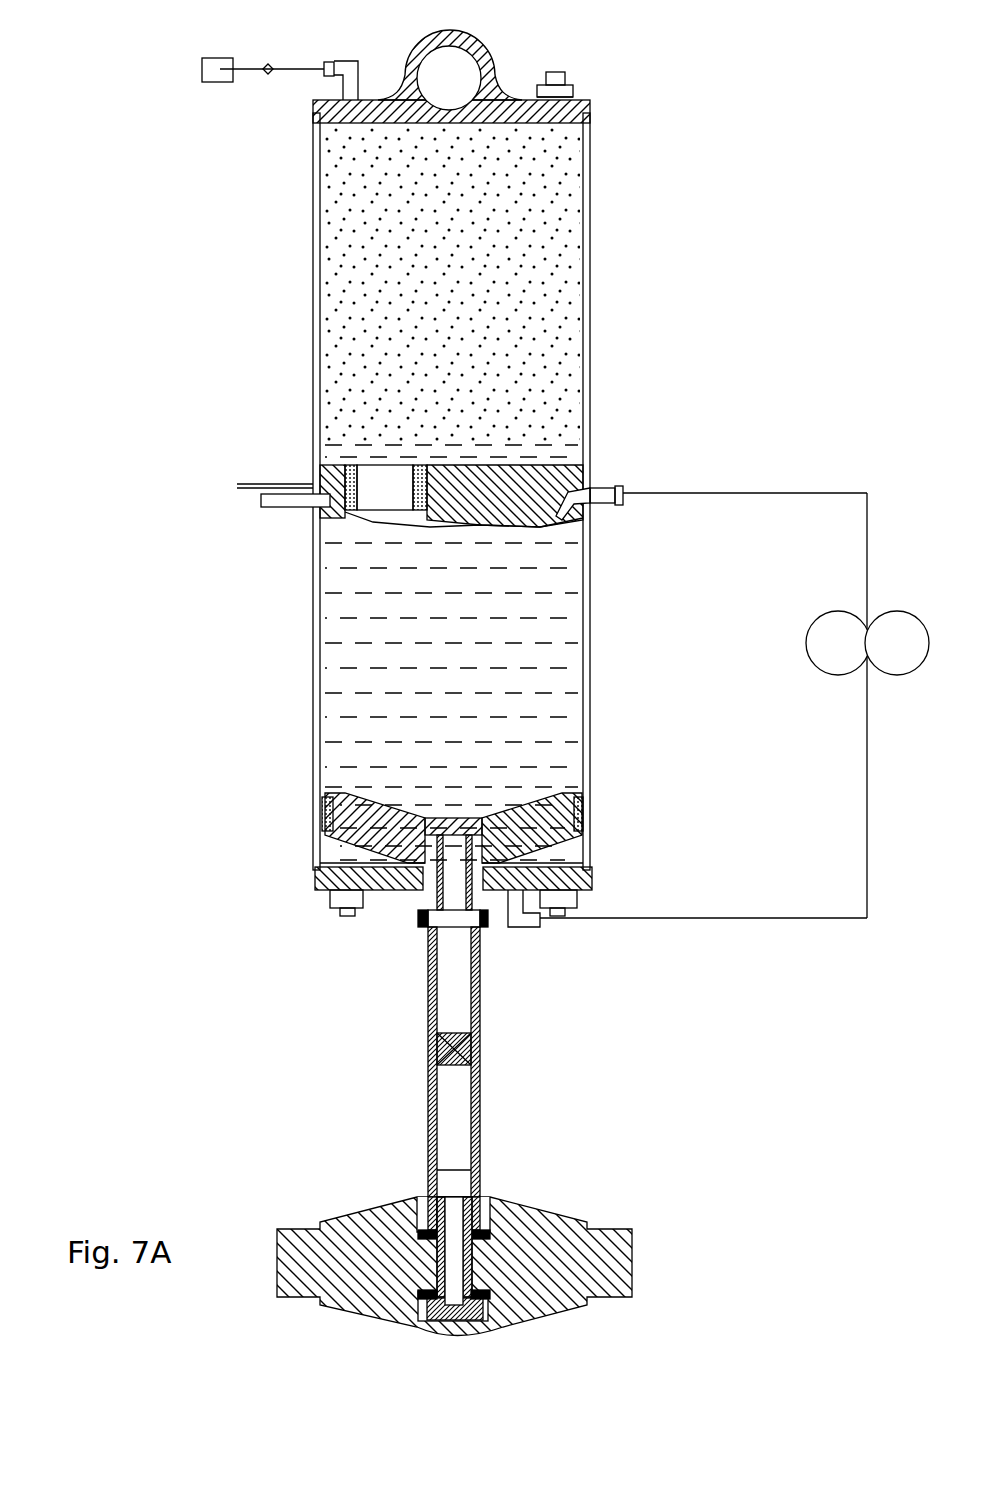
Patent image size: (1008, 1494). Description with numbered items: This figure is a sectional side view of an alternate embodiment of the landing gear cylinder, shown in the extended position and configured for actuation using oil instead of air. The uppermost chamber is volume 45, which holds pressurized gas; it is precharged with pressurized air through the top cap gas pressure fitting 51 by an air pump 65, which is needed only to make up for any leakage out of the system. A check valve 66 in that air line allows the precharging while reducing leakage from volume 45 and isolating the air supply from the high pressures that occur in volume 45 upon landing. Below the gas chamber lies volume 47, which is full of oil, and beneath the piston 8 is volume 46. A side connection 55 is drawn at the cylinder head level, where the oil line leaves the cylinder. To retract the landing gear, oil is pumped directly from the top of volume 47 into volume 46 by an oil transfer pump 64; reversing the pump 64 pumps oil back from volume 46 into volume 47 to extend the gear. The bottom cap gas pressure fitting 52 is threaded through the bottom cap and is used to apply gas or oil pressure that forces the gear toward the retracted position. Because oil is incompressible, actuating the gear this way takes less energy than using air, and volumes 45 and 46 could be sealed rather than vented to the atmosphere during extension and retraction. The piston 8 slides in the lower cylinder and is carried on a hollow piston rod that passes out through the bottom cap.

The top cap gas pressure fitting 51 is at (332, 62).
The air pump 65 is at (203, 80).
The check valve 66 is at (268, 72).
The volume 45 is at (545, 177).
The hydraulic fluid port 55 is at (620, 490).
The volume 47 is at (345, 570).
The oil transfer pump 64 is at (807, 646).
The volume 46 is at (593, 878).
The piston 8 is at (393, 887).
The bottom cap gas pressure fitting 52 is at (523, 930).